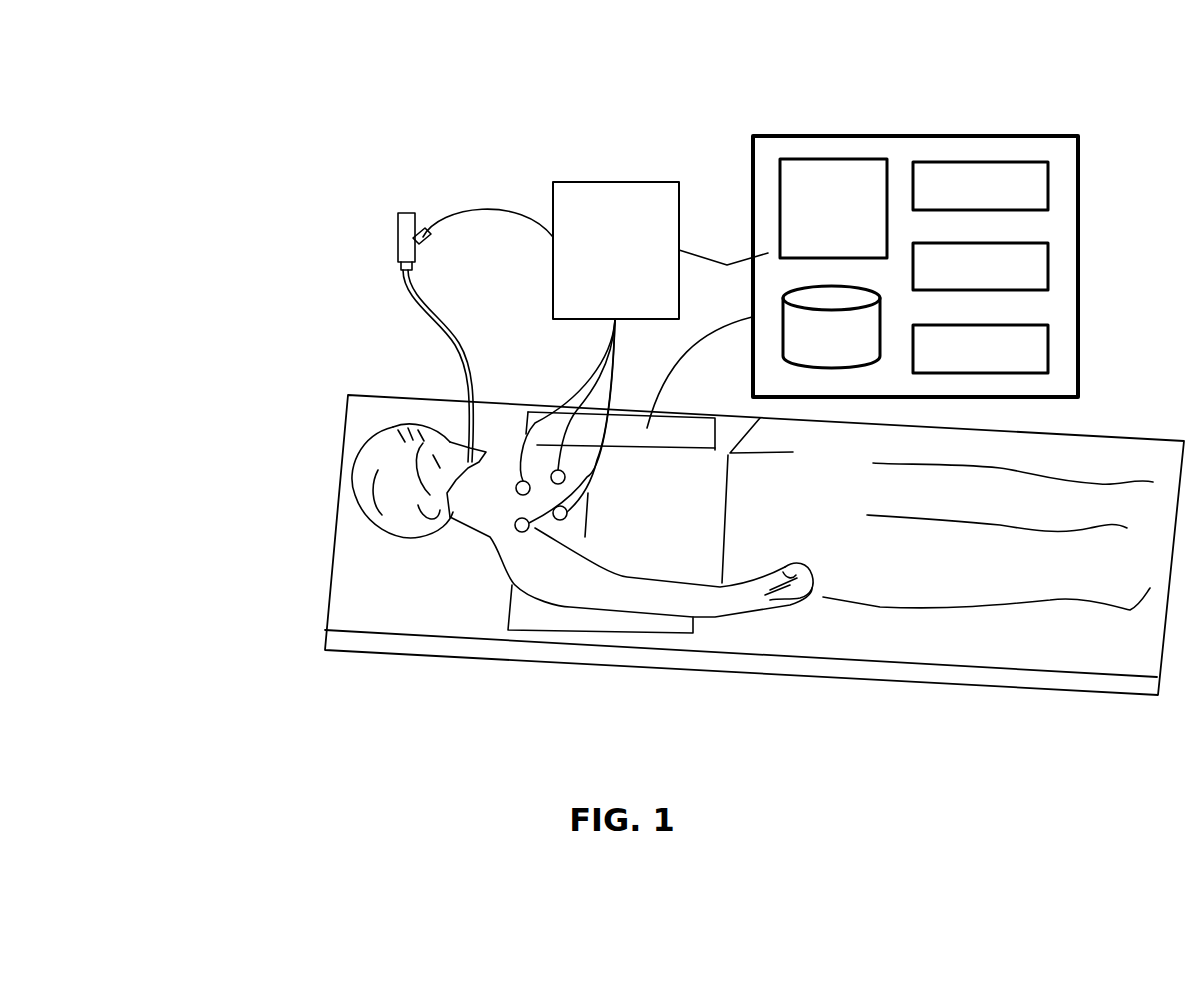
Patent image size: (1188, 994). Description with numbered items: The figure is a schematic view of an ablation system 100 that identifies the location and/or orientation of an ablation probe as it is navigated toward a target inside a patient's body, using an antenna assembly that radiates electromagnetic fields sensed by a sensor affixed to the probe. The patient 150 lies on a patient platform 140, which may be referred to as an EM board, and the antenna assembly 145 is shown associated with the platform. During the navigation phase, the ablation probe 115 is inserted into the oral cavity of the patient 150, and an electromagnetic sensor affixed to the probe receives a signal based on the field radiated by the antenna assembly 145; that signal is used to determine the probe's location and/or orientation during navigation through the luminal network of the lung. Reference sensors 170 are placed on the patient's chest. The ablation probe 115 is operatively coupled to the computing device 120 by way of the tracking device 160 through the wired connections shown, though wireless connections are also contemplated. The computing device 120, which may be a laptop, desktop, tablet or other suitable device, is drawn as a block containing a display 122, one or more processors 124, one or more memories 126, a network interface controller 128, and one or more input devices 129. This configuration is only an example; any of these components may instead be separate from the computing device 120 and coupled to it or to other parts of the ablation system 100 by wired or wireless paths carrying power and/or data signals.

The ablation system 100 is at (648, 88).
The ablation probe 115 is at (447, 323).
The computing device 120 is at (858, 117).
The display 122 is at (811, 226).
The processors 124 is at (961, 201).
The memories 126 is at (811, 349).
The network interface controller 128 is at (961, 281).
The input devices 129 is at (961, 362).
The patient platform 140 is at (367, 595).
The antenna assembly 145 is at (545, 608).
The patient 150 is at (382, 443).
The tracking device 160 is at (596, 266).
The reference sensors 170 is at (594, 515).